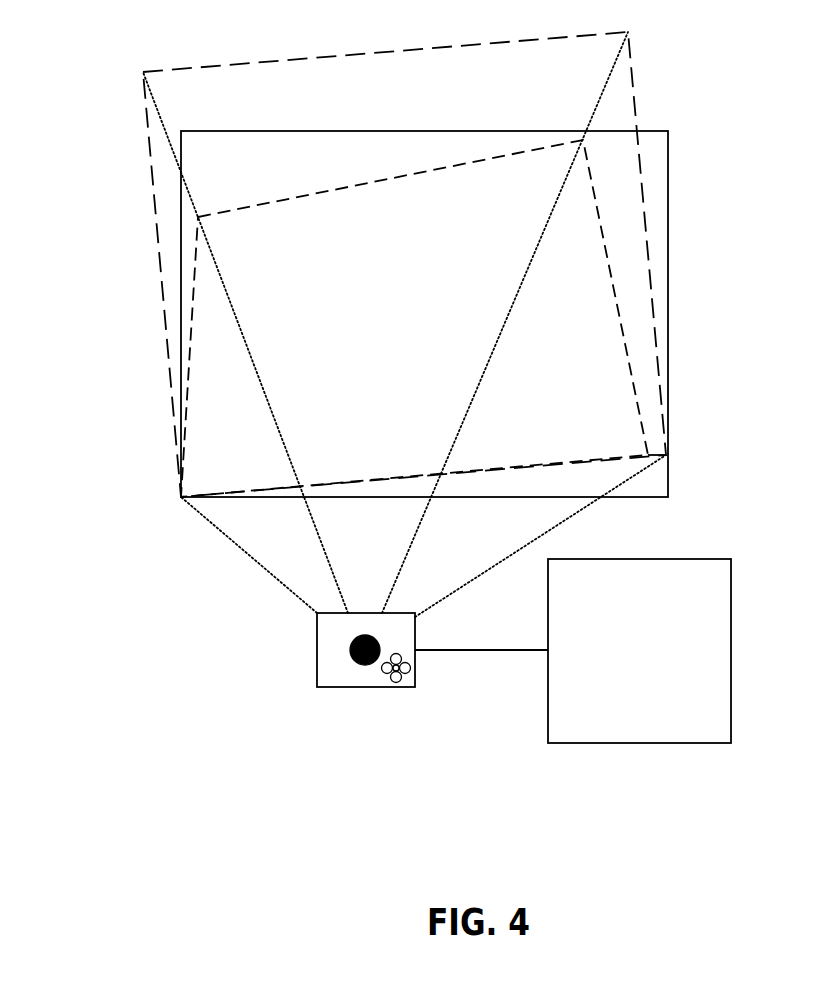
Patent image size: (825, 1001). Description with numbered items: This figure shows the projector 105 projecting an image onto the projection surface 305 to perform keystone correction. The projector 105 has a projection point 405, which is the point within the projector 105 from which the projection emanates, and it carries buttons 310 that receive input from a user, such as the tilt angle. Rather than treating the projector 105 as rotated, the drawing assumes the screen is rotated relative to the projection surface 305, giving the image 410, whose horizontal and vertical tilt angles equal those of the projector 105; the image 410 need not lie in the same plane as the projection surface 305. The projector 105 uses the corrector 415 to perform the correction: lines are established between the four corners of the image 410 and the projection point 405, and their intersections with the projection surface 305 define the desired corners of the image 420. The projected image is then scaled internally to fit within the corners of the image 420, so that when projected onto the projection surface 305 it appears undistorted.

The projector 105 is at (317, 648).
The projection surface 305 is at (668, 192).
The buttons 310 is at (445, 718).
The projection point 405 is at (365, 665).
The image 410 is at (150, 170).
The corrector 415 is at (731, 617).
The image 420 is at (310, 193).